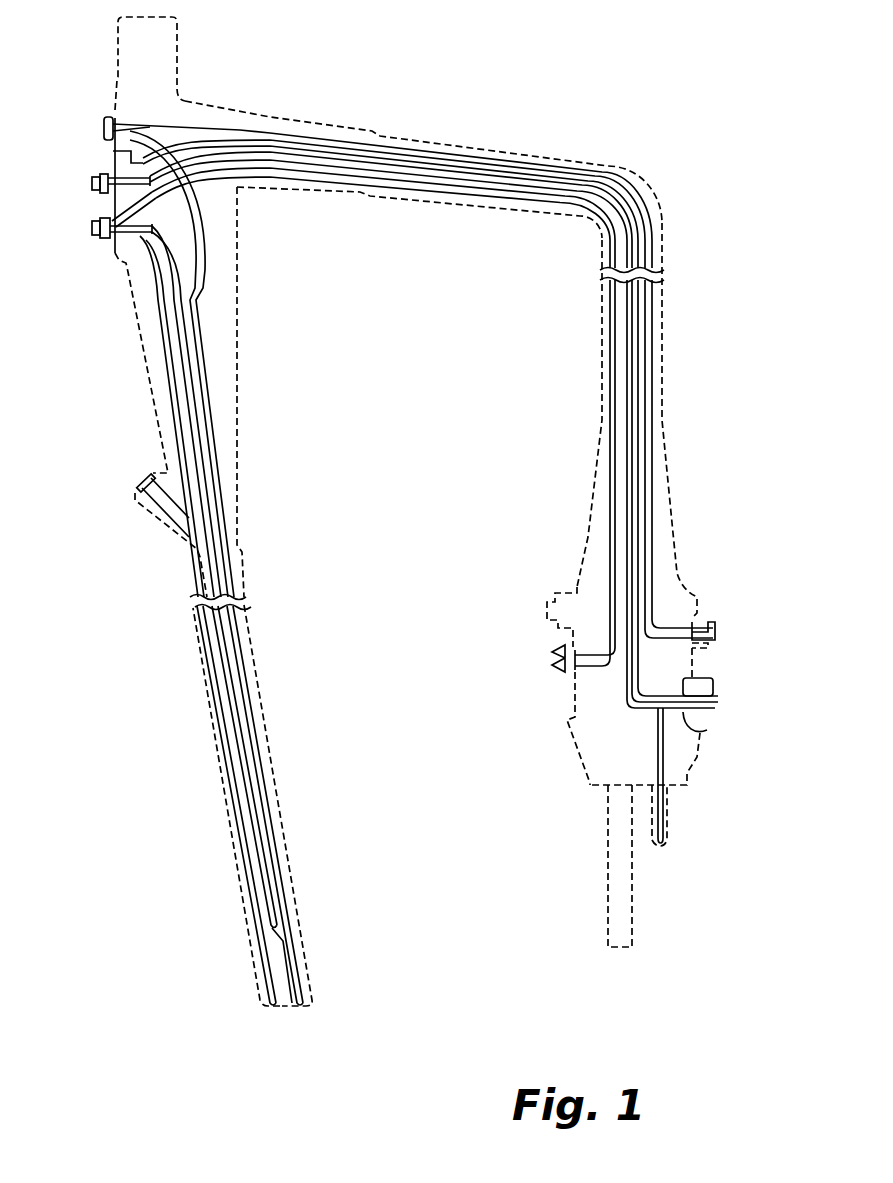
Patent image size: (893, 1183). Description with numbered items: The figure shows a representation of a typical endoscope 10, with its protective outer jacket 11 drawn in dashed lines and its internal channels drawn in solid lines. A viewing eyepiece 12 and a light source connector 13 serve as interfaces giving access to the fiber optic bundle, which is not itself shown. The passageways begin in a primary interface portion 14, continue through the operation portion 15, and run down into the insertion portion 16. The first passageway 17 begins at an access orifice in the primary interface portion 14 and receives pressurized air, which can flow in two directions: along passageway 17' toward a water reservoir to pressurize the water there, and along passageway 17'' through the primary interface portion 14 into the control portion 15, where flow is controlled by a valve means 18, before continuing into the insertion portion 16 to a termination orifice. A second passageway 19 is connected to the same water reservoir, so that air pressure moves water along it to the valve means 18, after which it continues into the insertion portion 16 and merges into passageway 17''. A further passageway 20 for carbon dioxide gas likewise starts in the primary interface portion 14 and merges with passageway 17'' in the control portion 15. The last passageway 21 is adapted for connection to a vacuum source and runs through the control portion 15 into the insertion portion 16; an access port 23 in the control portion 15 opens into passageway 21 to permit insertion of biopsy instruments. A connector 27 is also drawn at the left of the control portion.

The endoscope 10 is at (510, 94).
The protective outer jacket 11 is at (240, 337).
The viewing eyepiece 12 is at (179, 50).
The light source connector 13 is at (633, 910).
The primary interface portion 14 is at (587, 538).
The operation portion 15 is at (463, 205).
The insertion portion 16 is at (153, 404).
The first channel or passageway 17 is at (475, 533).
The water reservoir passageway 17' is at (715, 731).
The air passageway 17'' is at (415, 579).
The valve means 18 is at (100, 238).
The second channel or passageway 19 is at (113, 152).
The carbon dioxide passageway 20 is at (136, 133).
The vacuum passageway 21 is at (555, 661).
The access port 23 is at (138, 477).
The connector 27 is at (92, 183).